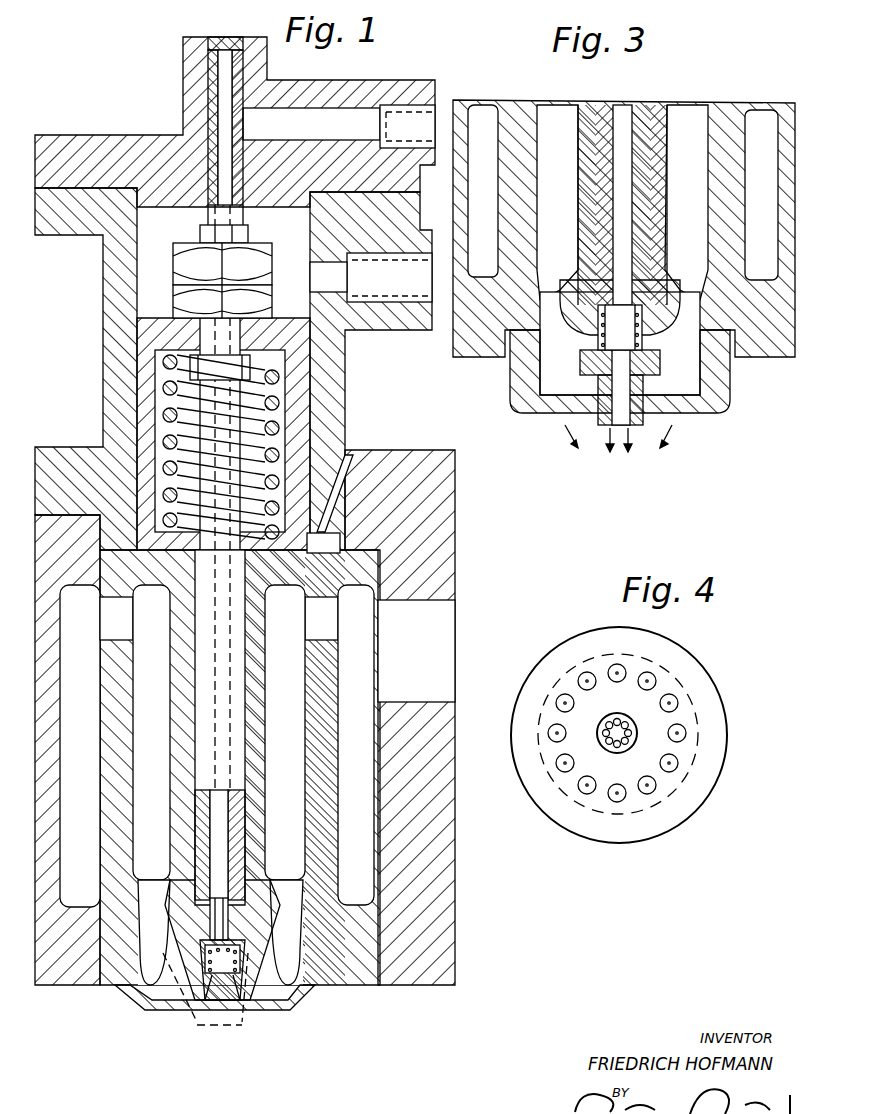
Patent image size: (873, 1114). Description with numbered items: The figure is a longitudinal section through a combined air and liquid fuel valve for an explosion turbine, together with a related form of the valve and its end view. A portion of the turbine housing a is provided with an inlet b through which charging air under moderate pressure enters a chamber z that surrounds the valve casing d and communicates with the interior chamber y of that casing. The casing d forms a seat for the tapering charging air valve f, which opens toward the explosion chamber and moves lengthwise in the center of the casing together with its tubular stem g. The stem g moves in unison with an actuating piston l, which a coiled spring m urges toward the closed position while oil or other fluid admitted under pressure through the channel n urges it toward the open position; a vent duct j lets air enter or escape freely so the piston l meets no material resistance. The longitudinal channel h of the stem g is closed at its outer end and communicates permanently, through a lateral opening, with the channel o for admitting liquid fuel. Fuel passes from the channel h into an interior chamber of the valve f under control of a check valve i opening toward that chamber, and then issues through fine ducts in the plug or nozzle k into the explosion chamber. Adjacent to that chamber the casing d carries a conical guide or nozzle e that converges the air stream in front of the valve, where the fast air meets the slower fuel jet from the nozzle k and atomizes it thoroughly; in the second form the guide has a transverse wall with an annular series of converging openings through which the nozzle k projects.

In FIG. 1, the housing a is at (420, 860).
In FIG. 1, the inlet b is at (416, 651).
In FIG. 1, the valve casing d is at (320, 737).
In FIG. 3, the valve casing d is at (733, 262).
In FIG. 1, the guide or nozzle e is at (298, 988).
In FIG. 3, the guide or nozzle e is at (712, 387).
In FIG. 4, the guide or nozzle e is at (710, 692).
In FIG. 1, the charging air valve f is at (247, 942).
In FIG. 1, the tubular stem g is at (213, 127).
In FIG. 1, the longitudinal channel h is at (213, 70).
In FIG. 1, the check valve i is at (210, 917).
In FIG. 1, the vent duct j is at (350, 453).
In FIG. 1, the plug or nozzle k is at (212, 1007).
In FIG. 3, the plug or nozzle k is at (613, 423).
In FIG. 4, the plug or nozzle k is at (615, 752).
In FIG. 1, the actuating piston l is at (147, 450).
In FIG. 1, the coiled spring m is at (165, 378).
In FIG. 1, the channel n is at (400, 290).
In FIG. 1, the channel o is at (325, 128).
In FIG. 1, the interior chamber y is at (285, 732).
In FIG. 1, the chamber z is at (356, 745).